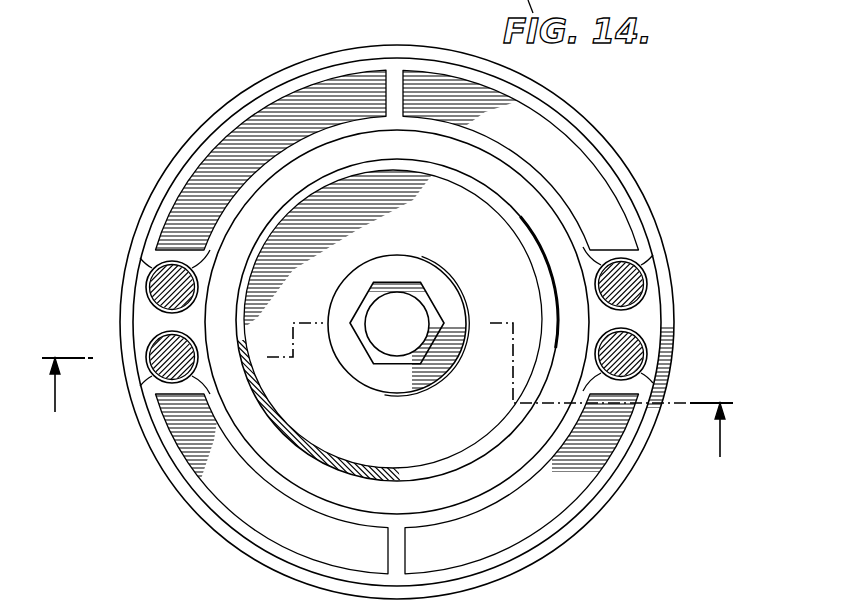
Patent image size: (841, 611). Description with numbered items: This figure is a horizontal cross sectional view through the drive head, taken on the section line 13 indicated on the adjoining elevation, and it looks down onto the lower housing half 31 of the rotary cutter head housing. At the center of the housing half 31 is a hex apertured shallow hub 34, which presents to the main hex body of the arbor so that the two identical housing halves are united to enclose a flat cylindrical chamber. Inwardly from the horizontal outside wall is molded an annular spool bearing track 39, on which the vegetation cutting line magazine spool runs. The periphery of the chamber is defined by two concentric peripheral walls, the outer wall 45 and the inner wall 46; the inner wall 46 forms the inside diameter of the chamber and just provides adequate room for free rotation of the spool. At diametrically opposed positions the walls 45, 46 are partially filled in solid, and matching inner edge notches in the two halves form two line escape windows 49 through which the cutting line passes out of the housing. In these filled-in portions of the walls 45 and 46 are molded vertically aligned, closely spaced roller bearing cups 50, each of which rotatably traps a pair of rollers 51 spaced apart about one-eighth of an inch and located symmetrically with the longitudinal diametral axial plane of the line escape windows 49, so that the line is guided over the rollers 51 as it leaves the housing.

The section line 13- 13 is at (386, 390).
The lower housing half 31 is at (606, 116).
The hex apertured shallow hub 34 is at (381, 380).
The annular spool bearing track 39 is at (480, 193).
The outer wall 45 is at (608, 179).
The inner wall 46 is at (565, 213).
The line escape window 49 is at (647, 326).
The roller bearing cup 50 is at (640, 300).
The roller 51 is at (633, 274).